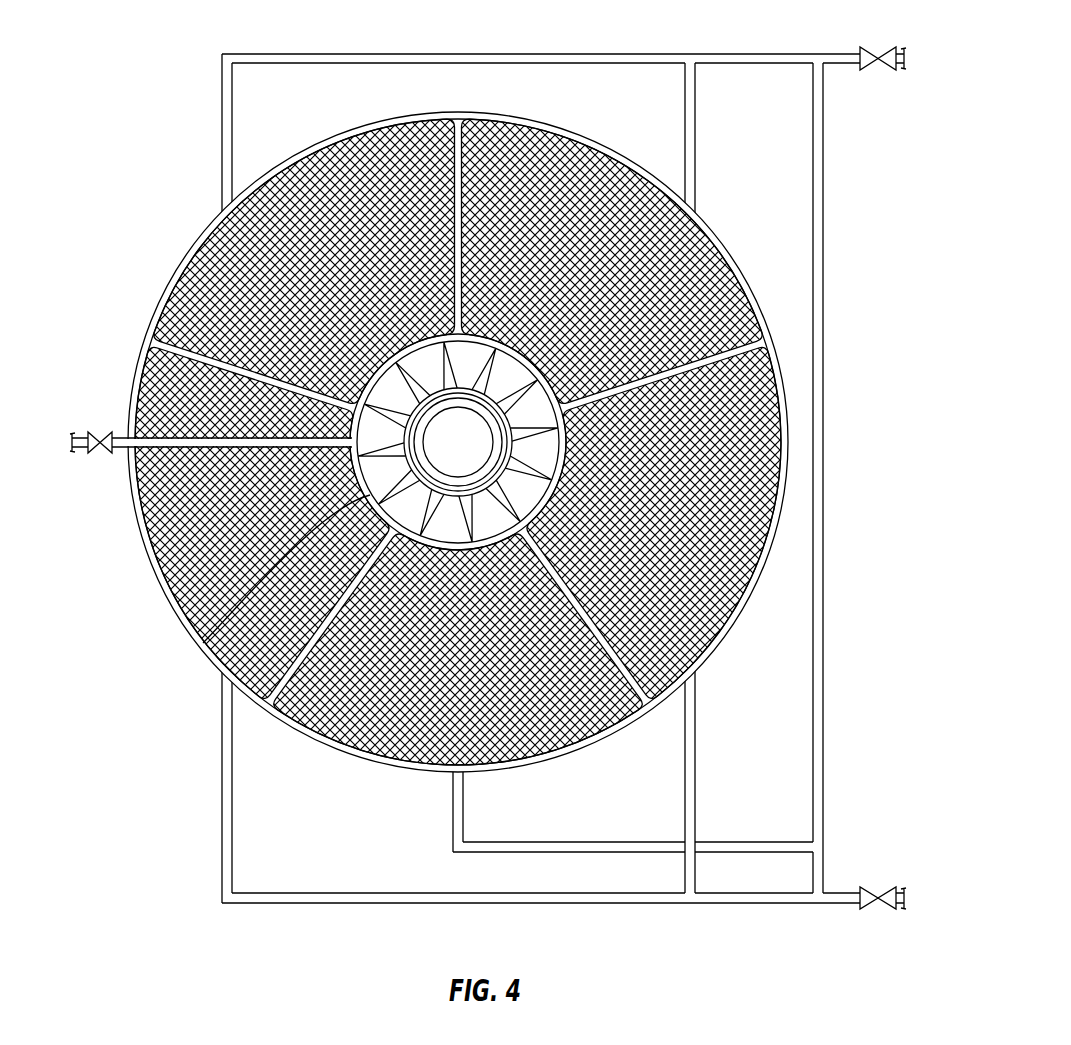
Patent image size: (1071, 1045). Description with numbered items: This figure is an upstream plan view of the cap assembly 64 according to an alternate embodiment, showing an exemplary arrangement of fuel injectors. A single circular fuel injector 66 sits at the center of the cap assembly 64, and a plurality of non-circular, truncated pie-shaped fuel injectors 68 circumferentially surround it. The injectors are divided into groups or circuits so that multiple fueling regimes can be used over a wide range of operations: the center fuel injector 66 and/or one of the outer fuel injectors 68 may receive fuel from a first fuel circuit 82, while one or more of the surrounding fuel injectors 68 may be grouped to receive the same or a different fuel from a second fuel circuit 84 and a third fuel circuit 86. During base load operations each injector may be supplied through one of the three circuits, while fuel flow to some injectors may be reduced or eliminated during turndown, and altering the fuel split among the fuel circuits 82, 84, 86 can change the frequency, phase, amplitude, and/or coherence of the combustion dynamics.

The cap assembly 64 is at (453, 451).
The fuel injector 66 is at (205, 640).
The truncated pie-shaped fuel injector 68 is at (208, 237).
The first fuel circuit 82 is at (70, 446).
The second fuel circuit 84 is at (894, 73).
The third fuel circuit 86 is at (897, 887).